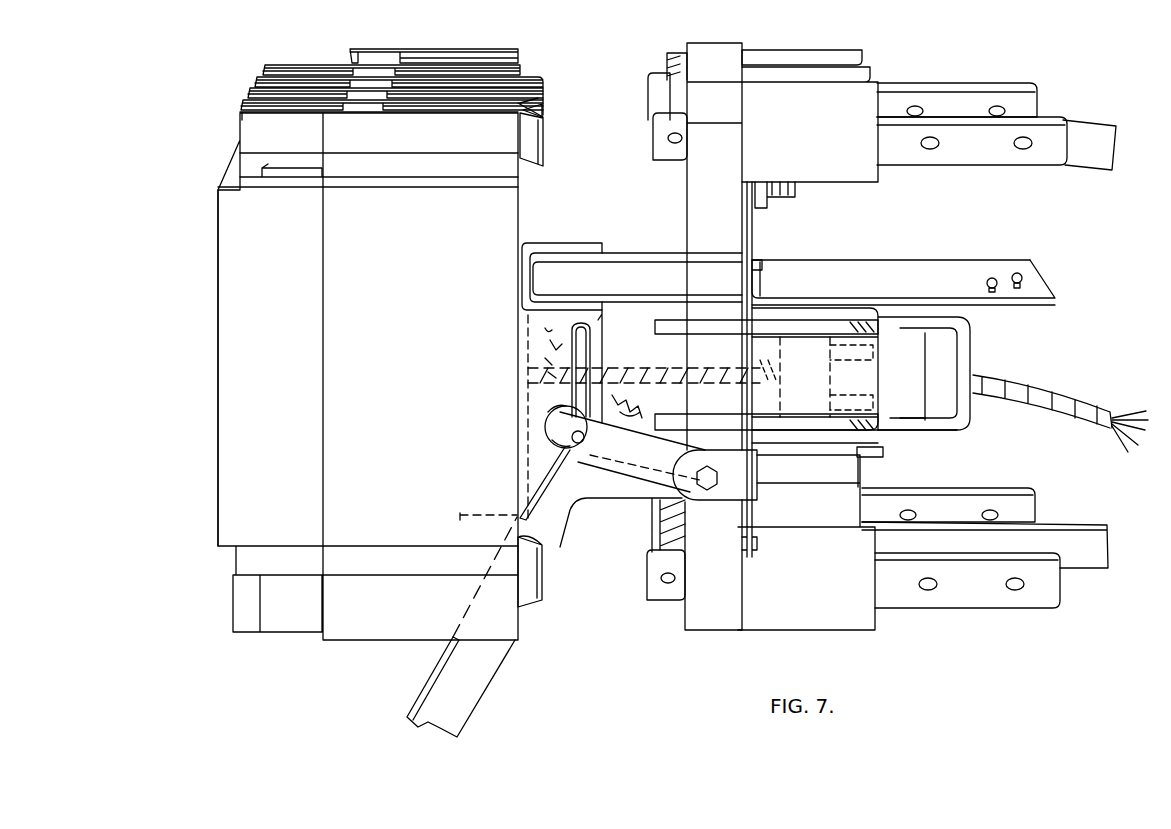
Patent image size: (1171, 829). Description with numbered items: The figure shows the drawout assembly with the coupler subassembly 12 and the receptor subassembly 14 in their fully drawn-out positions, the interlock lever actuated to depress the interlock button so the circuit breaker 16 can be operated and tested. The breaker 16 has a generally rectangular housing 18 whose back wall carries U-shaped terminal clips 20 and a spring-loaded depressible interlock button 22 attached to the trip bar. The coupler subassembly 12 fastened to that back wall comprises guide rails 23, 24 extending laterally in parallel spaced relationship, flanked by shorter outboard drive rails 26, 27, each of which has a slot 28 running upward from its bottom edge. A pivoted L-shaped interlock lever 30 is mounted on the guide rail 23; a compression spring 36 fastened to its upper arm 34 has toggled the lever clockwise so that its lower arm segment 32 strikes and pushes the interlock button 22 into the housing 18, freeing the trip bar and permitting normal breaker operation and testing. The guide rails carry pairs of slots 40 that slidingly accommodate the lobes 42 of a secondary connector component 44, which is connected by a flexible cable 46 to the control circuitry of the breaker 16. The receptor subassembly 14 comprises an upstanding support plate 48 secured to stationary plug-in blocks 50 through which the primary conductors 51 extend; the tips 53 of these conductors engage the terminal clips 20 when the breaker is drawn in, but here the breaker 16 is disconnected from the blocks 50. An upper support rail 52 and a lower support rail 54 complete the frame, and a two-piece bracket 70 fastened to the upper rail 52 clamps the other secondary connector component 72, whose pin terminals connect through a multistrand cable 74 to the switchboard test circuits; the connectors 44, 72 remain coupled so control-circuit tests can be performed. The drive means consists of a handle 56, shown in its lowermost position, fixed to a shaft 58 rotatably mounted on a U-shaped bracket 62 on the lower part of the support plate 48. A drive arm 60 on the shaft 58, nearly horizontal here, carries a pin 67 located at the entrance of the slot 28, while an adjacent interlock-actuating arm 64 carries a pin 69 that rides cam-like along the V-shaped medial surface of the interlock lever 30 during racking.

The coupler subassembly 12 is at (562, 272).
The receptor subassembly 14 is at (993, 263).
The circuit breaker 16 is at (430, 256).
The housing 18 is at (222, 497).
The terminal clips 20 is at (533, 143).
The interlock button 22 is at (470, 512).
The guide rail 23 is at (665, 308).
The guide rail 24 is at (630, 257).
The drive rail 26 is at (602, 320).
The drive rail 27 is at (565, 245).
The slot 28 is at (592, 347).
The interlock lever 30 is at (545, 428).
The lower arm segment 32 is at (570, 530).
The upper arm 34 is at (628, 410).
The compression spring 36 is at (560, 350).
The slots 40 is at (702, 325).
The lobes 42 is at (805, 335).
The secondary connector component 44 is at (812, 407).
The cable 46 is at (685, 375).
The support plate 48 is at (752, 222).
The plug-in blocks 50 is at (773, 93).
The primary conductors 51 is at (1033, 100).
The upper support rail 52 is at (937, 280).
The tips 53 is at (676, 152).
The lower support rail 54 is at (878, 453).
The handle 56 is at (460, 695).
The shaft 58 is at (708, 488).
The drive arm 60 is at (627, 462).
The U-shaped bracket 62 is at (750, 485).
The interlock-actuating arm 64 is at (650, 470).
The pin 67 is at (572, 440).
The pin 69 is at (582, 468).
The bracket 70 is at (937, 328).
The secondary connector component 72 is at (912, 412).
The cable 74 is at (1063, 400).